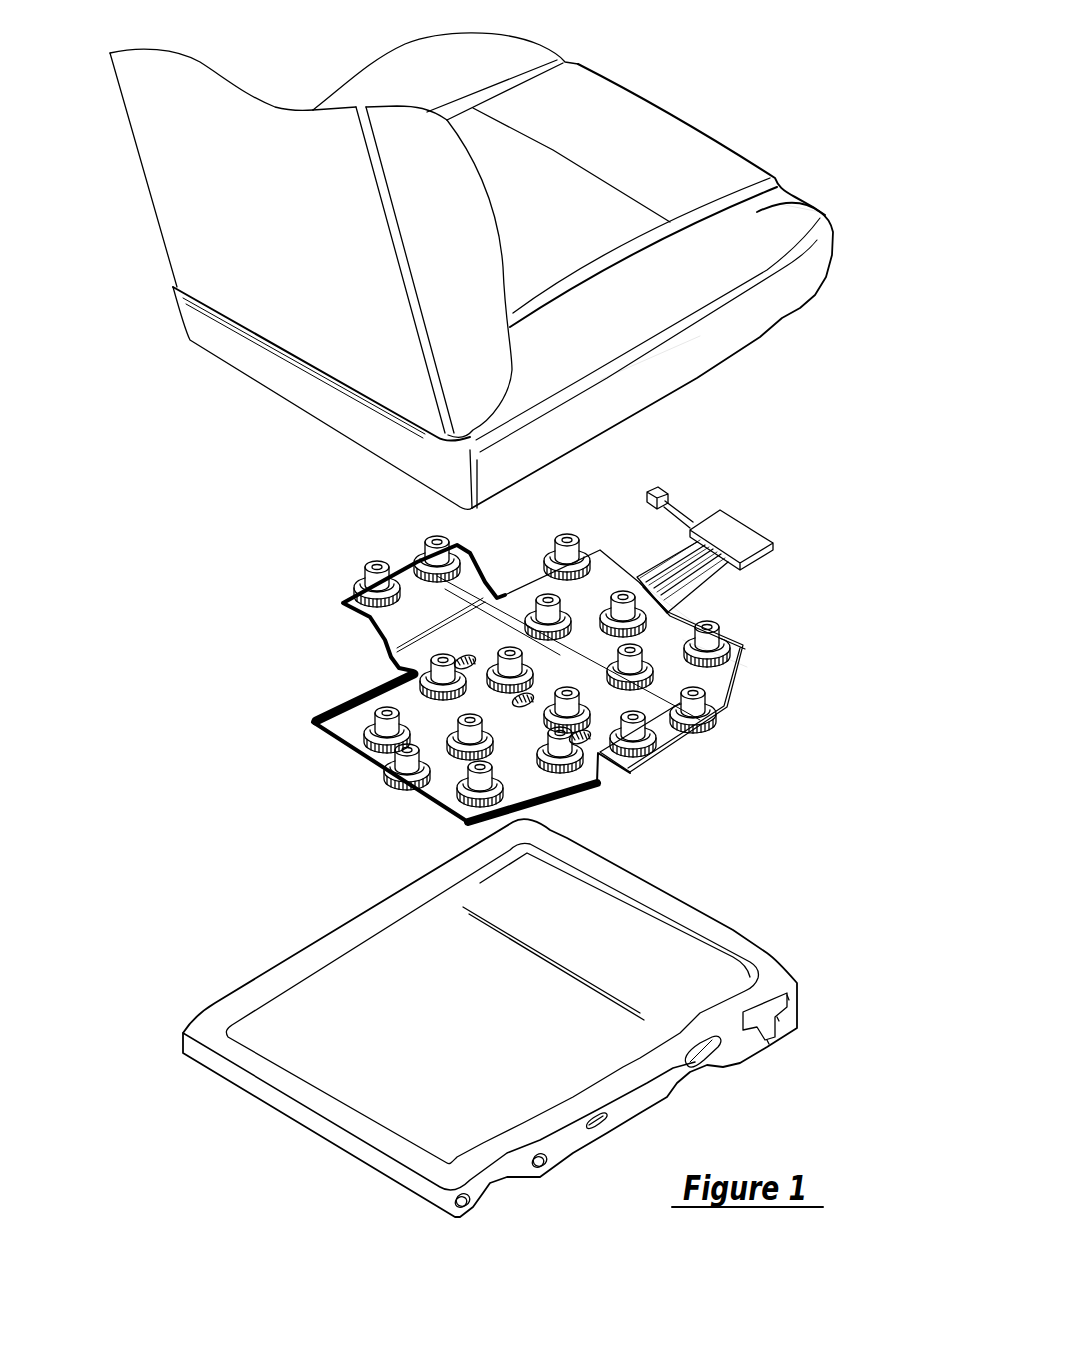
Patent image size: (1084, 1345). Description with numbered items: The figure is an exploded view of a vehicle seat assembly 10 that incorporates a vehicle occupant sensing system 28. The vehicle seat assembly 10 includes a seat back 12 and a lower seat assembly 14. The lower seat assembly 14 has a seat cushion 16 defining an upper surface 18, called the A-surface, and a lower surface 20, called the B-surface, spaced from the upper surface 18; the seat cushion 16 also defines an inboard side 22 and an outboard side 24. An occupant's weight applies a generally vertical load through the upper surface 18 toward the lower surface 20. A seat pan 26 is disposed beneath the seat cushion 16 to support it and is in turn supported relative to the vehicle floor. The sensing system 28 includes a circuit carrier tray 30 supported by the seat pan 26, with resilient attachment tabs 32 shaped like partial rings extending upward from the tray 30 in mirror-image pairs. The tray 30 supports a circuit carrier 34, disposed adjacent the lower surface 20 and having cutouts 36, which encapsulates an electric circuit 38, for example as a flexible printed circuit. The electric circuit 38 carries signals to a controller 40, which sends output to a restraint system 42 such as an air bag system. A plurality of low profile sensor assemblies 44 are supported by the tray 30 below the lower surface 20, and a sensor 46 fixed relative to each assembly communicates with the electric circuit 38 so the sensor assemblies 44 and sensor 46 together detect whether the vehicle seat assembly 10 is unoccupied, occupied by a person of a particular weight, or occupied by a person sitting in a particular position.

The vehicle seat assembly 10 is at (223, 500).
The seat back 12 is at (198, 220).
The lower seat assembly 14 is at (753, 452).
The seat cushion 16 is at (827, 212).
The upper surface 18 is at (531, 209).
The lower surface 20 is at (765, 335).
The inboard side 22 is at (387, 58).
The outboard side 24 is at (757, 305).
The seat pan 26 is at (390, 1083).
The vehicle occupant sensing system 28 is at (422, 695).
The circuit carrier tray 30 is at (313, 717).
The resilient attachment tabs 32 is at (410, 770).
The circuit carrier 34 is at (580, 775).
The cutouts 36 is at (537, 800).
The electric circuit 38 is at (695, 614).
The controller 40 is at (737, 537).
The restraint system 42 is at (660, 488).
The low profile sensor assemblies 44 is at (722, 624).
The sensor 46 is at (757, 618).